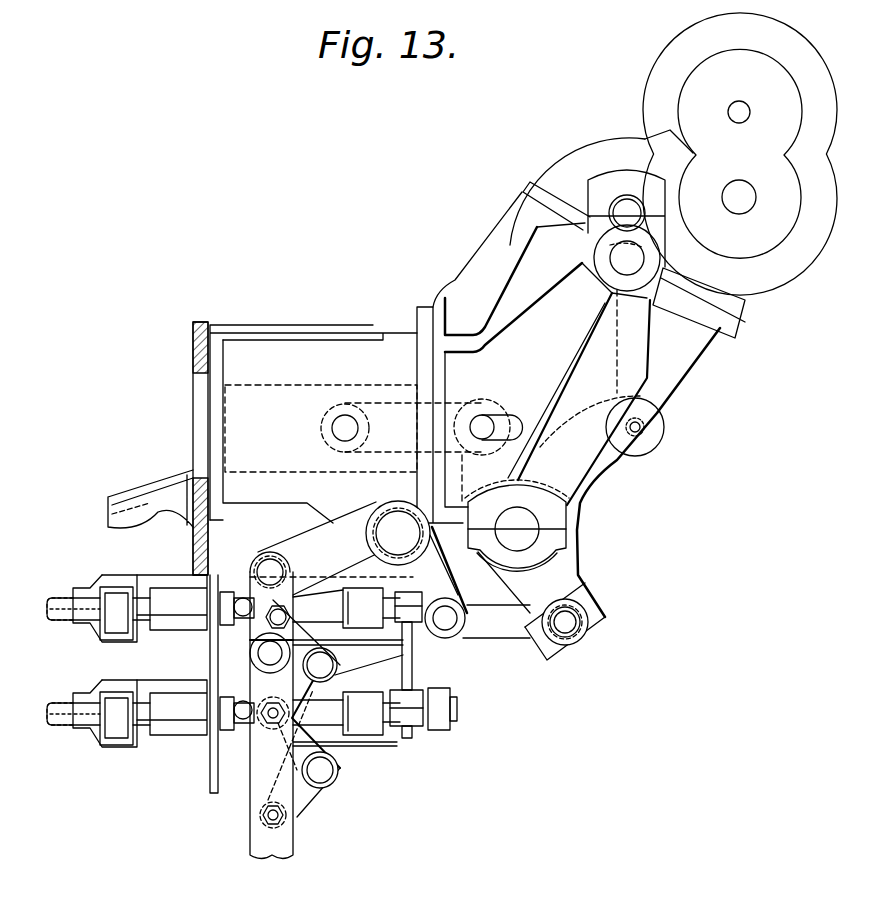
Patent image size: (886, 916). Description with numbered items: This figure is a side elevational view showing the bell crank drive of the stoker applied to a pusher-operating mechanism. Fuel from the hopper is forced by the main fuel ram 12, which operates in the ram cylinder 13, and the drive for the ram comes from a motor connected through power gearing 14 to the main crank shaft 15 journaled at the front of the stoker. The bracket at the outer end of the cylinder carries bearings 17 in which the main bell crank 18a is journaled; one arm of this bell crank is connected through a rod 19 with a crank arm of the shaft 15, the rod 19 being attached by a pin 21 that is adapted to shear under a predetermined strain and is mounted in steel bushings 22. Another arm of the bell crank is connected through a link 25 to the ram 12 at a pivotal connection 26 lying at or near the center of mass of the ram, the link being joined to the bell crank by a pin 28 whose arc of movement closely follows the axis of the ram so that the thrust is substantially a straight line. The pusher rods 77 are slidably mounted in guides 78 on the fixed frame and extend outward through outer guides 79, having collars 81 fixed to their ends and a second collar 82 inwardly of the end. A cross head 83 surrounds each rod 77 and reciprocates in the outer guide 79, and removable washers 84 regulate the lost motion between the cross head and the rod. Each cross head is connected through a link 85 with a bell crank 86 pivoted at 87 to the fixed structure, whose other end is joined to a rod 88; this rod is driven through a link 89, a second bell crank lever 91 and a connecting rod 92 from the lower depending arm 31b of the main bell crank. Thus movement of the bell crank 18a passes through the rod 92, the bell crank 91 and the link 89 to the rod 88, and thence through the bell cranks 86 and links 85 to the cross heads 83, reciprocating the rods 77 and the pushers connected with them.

The main fuel ram 12 is at (305, 386).
The ram cylinder 13 is at (345, 372).
The power gearing 14 is at (700, 92).
The main crank shaft 15 is at (645, 258).
The bearings 17 is at (512, 540).
The bell crank 18a is at (610, 490).
The rod 19 is at (652, 362).
The pin 21 is at (646, 428).
The steel bushings 22 is at (652, 414).
The link 25 is at (393, 405).
The pivotal connection 26 is at (333, 430).
The pin 28 is at (484, 420).
The lower depending arm 31b is at (562, 572).
The rods 77 is at (57, 705).
The guides 78 is at (182, 634).
The outer guides 79 is at (330, 632).
The collars 81 is at (438, 596).
The second collar 82 is at (226, 620).
The cross head 83 is at (346, 661).
The removable washers 84 is at (443, 692).
The link 85 is at (250, 630).
The bell crank 86 is at (270, 735).
The pivot 87 is at (322, 666).
The rod 88 is at (290, 842).
The link 89 is at (292, 590).
The second bell crank lever 91 is at (350, 517).
The connecting rod 92 is at (505, 639).